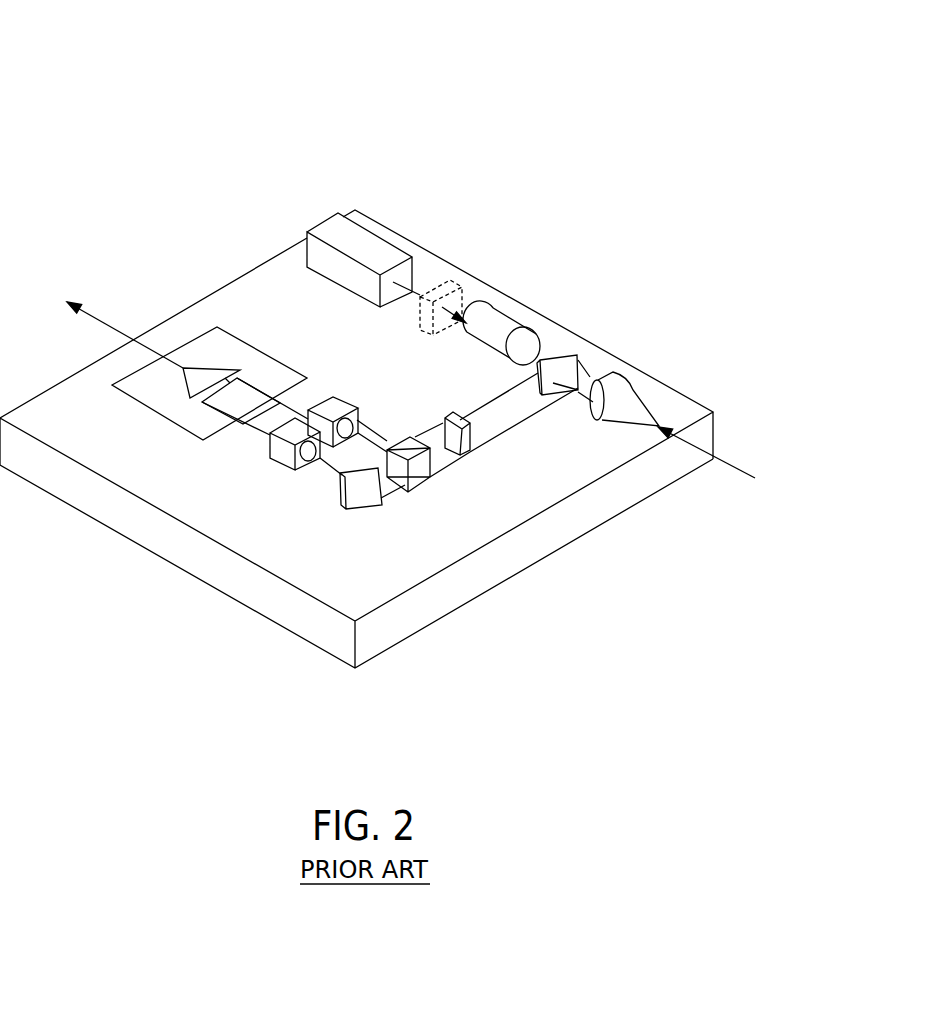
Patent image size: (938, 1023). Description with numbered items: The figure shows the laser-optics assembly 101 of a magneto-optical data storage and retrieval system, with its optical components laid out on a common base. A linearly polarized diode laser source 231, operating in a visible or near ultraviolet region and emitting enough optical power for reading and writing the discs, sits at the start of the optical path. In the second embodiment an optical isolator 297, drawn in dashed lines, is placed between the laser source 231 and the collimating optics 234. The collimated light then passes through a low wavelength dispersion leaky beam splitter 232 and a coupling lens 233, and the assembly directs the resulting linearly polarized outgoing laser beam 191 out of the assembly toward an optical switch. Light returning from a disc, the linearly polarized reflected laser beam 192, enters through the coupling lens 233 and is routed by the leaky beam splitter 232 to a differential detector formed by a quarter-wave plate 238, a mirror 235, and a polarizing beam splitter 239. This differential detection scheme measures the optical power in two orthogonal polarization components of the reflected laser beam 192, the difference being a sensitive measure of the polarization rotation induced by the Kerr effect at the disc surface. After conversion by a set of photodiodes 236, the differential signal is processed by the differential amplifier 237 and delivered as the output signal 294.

The laser-optics assembly 101 is at (169, 112).
The linearly polarized diode laser source 231 is at (382, 240).
The optical isolator 297 is at (460, 283).
The collimating optics 234 is at (530, 308).
The low wavelength dispersion leaky beam splitter 232 is at (577, 355).
The coupling lens 233 is at (638, 390).
The reflected laser beam 192 is at (669, 424).
The outgoing laser beam 191 is at (758, 468).
The differential amplifier 237 is at (212, 353).
The signal 294 is at (102, 325).
The set of photodiodes 236 is at (308, 410).
The mirror 235 is at (357, 507).
The 1/4 wave plate 238 is at (467, 457).
The polarizing beam splitter 239 is at (413, 490).